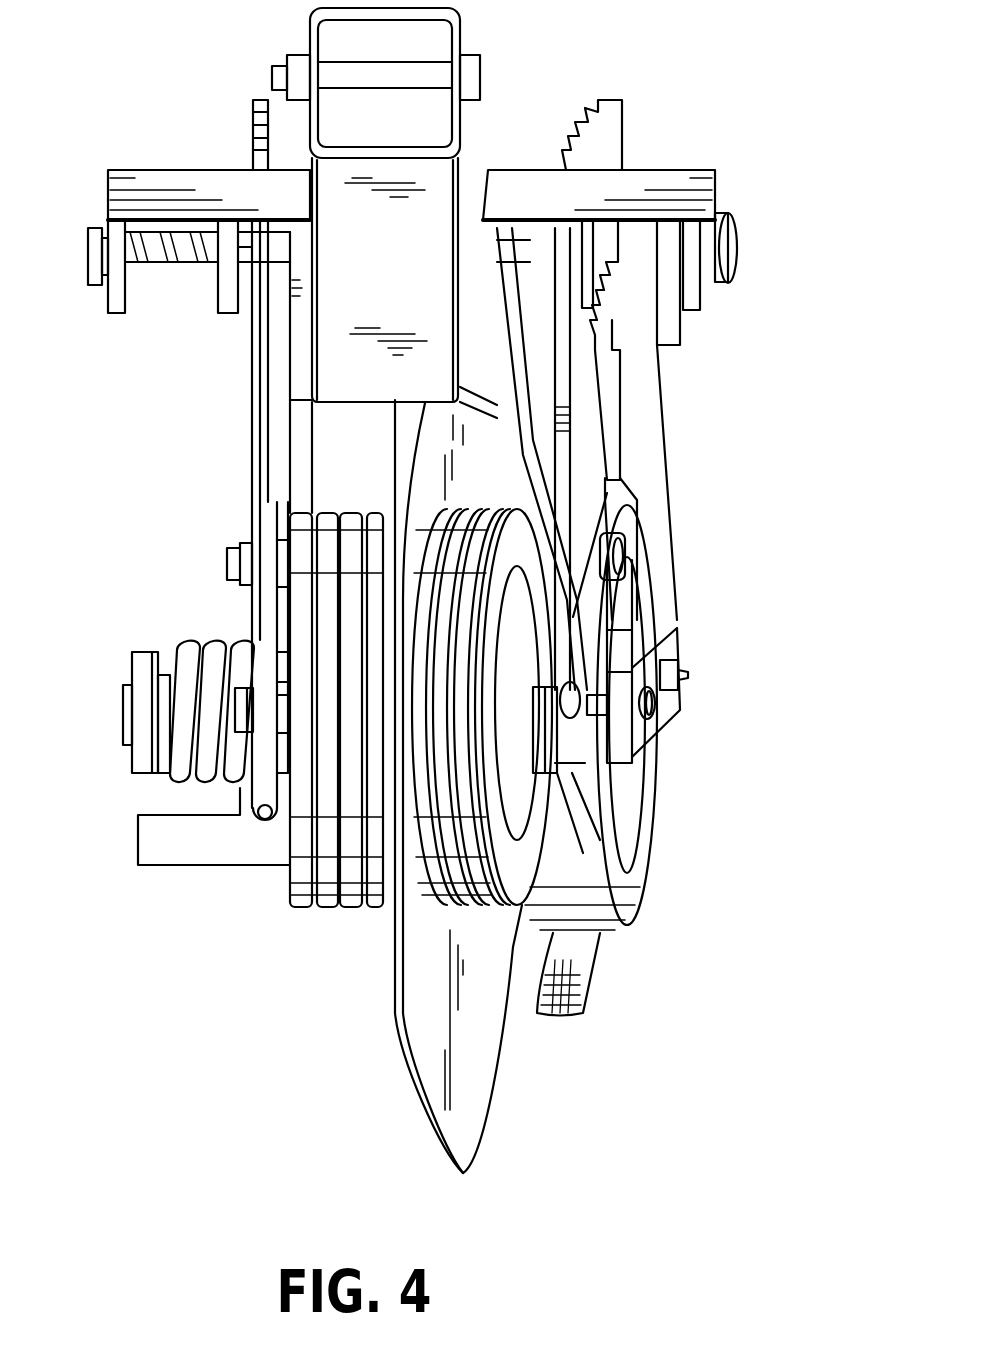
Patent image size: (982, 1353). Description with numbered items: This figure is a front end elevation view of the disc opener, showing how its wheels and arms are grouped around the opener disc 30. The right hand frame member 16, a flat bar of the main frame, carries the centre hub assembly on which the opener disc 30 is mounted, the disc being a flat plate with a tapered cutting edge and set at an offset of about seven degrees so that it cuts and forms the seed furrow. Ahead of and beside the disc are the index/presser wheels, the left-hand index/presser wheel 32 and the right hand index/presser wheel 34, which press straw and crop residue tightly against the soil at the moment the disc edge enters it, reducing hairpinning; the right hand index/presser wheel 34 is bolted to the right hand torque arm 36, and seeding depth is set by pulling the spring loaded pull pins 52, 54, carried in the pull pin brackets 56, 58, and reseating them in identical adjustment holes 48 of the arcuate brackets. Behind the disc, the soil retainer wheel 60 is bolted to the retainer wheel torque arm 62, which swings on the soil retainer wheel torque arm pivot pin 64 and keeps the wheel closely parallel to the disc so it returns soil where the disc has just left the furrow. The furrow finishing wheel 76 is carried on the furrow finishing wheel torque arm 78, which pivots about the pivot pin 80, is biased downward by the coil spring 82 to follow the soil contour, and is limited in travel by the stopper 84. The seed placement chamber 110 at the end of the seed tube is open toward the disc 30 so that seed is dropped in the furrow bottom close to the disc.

The right hand frame member 16 is at (298, 452).
The opener disc 30 is at (427, 1112).
The left-hand index/presser wheel 32 is at (517, 873).
The right hand index/presser wheel 34 is at (325, 614).
The right hand torque arm 36 is at (258, 535).
The adjustment holes 48 is at (610, 143).
The spring loaded pull pin 52 is at (738, 237).
The spring loaded pull pin 54 is at (98, 238).
The pull pin bracket 56 is at (680, 177).
The pull pin bracket 58 is at (182, 190).
The soil retainer wheel 60 is at (656, 833).
The retainer wheel torque arm 62 is at (670, 643).
The soil retainer wheel torque arm pivot pin 64 is at (657, 707).
The furrow finishing wheel 76 is at (573, 960).
The furrow finishing wheel torque arm 78 is at (143, 755).
The pivot pin 80 is at (123, 698).
The coil spring 82 is at (182, 773).
The stopper 84 is at (203, 852).
The seed placement chamber 110 is at (395, 1000).